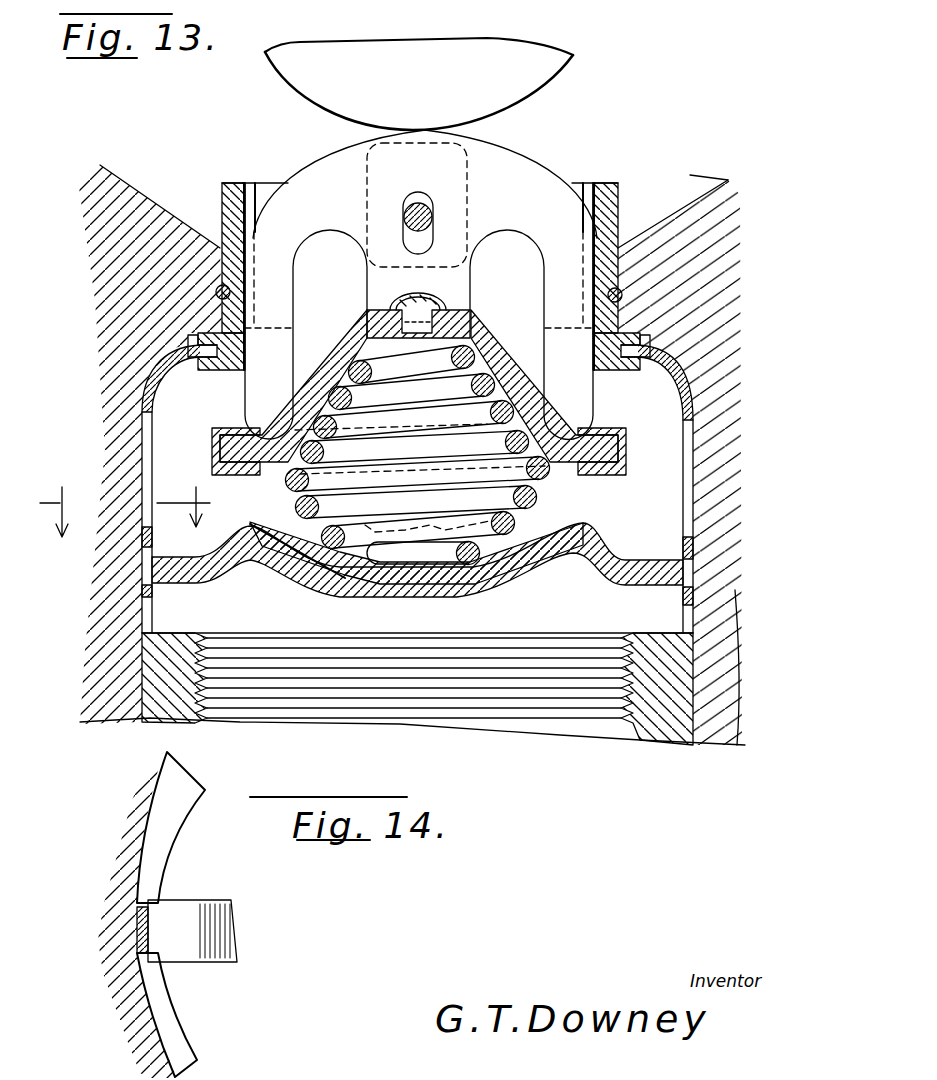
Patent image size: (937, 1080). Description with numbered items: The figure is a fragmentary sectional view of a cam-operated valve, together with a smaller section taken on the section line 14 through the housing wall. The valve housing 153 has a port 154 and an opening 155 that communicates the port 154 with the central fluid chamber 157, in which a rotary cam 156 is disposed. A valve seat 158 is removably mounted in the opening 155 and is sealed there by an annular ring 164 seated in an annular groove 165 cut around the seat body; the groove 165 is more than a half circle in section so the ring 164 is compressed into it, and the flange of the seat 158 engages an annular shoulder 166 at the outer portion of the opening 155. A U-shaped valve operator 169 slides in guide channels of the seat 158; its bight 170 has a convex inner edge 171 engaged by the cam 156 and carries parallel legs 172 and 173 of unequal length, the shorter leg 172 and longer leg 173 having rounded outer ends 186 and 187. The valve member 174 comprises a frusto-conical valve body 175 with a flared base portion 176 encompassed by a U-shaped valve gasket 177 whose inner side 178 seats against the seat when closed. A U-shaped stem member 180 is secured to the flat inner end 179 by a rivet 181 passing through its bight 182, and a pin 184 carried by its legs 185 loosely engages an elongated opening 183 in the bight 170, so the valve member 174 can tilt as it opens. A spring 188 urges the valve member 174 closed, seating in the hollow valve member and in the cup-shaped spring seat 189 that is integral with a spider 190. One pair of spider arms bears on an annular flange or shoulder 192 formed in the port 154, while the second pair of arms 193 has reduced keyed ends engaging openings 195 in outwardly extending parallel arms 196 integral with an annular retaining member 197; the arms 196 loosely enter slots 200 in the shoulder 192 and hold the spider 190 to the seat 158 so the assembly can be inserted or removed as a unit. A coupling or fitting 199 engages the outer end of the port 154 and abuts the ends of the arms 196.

In FIG. 13, the section line 14 is at (125, 499).
In FIG. 13, the valve housing 153 is at (668, 230).
In FIG. 13, the port 154 is at (697, 452).
In FIG. 13, the opening 155 is at (640, 268).
In FIG. 13, the rotary cam 156 is at (548, 73).
In FIG. 13, the central fluid chamber 157 is at (716, 190).
In FIG. 13, the valve seat 158 is at (607, 185).
In FIG. 13, the annular ring 164 is at (623, 295).
In FIG. 13, the annular groove 165 is at (640, 325).
In FIG. 13, the annular shoulder 166 is at (188, 347).
In FIG. 13, the valve operator 169 is at (530, 176).
In FIG. 13, the bight 170 is at (308, 183).
In FIG. 13, the convex inner edge 171 is at (322, 163).
In FIG. 13, the leg 172 is at (550, 292).
In FIG. 13, the leg 173 is at (287, 283).
In FIG. 13, the valve member 174 is at (529, 363).
In FIG. 13, the frusto-conical valve body 175 is at (303, 398).
In FIG. 13, the flange or flared base portion 176 is at (608, 452).
In FIG. 13, the valve gasket 177 is at (618, 474).
In FIG. 13, the inner side of gasket 178 is at (596, 430).
In FIG. 13, the flat inner end 179 is at (365, 328).
In FIG. 13, the U-shaped stem member 180 is at (481, 272).
In FIG. 13, the rivet 181 is at (430, 297).
In FIG. 13, the bight of stem member 182 is at (380, 308).
In FIG. 13, the elongated opening 183 is at (433, 233).
In FIG. 13, the pin 184 is at (420, 203).
In FIG. 13, the legs of stem member 185 is at (367, 203).
In FIG. 13, the rounded outer end 186 is at (587, 427).
In FIG. 13, the rounded outer end 187 is at (242, 420).
In FIG. 13, the spring 188 is at (308, 522).
In FIG. 13, the cup-shaped spring seat 189 is at (517, 567).
In FIG. 13, the spider 190 is at (418, 602).
In FIG. 13, the annular flange or shoulder 192 is at (663, 532).
In FIG. 14, the annular flange or shoulder 192 is at (177, 1045).
In FIG. 13, the second pair of arms 193 is at (200, 583).
In FIG. 14, the second pair of arms 193 is at (193, 950).
In FIG. 13, the openings 195 is at (137, 603).
In FIG. 13, the parallel arms 196 is at (140, 452).
In FIG. 14, the parallel arms 196 is at (110, 960).
In FIG. 13, the annular retaining member 197 is at (417, 396).
In FIG. 13, the coupling or fitting 199 is at (677, 743).
In FIG. 13, the slots 200 is at (680, 550).
In FIG. 14, the slots 200 is at (147, 905).